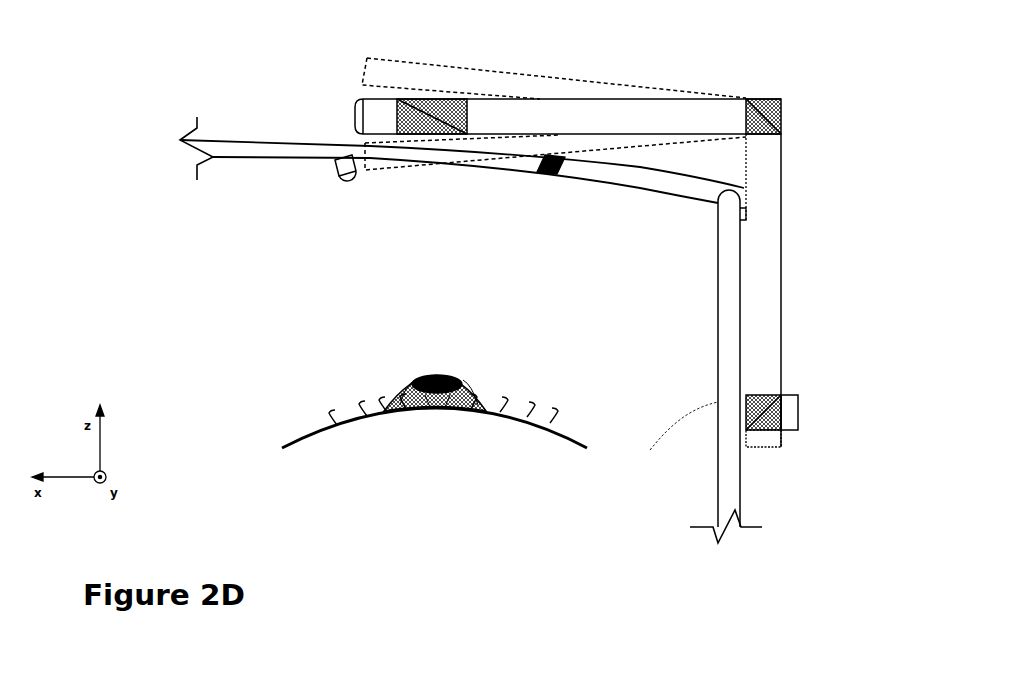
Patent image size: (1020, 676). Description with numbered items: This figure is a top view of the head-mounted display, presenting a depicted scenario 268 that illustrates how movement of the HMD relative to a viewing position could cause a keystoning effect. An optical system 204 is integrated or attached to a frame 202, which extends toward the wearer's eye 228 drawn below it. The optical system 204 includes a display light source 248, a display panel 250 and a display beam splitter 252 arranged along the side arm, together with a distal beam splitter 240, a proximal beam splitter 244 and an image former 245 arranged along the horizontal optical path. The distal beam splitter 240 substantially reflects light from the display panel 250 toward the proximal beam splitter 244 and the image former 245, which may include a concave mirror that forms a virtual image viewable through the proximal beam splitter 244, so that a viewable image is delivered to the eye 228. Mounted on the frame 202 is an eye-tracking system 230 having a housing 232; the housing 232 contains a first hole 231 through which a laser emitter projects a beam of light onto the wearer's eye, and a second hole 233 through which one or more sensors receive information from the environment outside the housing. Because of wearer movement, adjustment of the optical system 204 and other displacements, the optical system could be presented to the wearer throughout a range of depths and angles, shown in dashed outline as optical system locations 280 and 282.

The frame 202 is at (235, 138).
The optical system 204 is at (568, 70).
The eye 228 is at (383, 400).
The eye-tracking system 230 is at (562, 174).
The first hole 231 is at (548, 174).
The housing 232 is at (334, 168).
The second hole 233 is at (540, 173).
The distal beam splitter 240 is at (782, 117).
The proximal beam splitter 244 is at (417, 99).
The image former 245 is at (354, 117).
The display light source 248 is at (800, 412).
The display panel 250 is at (776, 450).
The display beam splitter 252 is at (763, 395).
The depicted scenario 268 is at (213, 66).
The optical system location 280 is at (367, 57).
The optical system location 282 is at (368, 170).